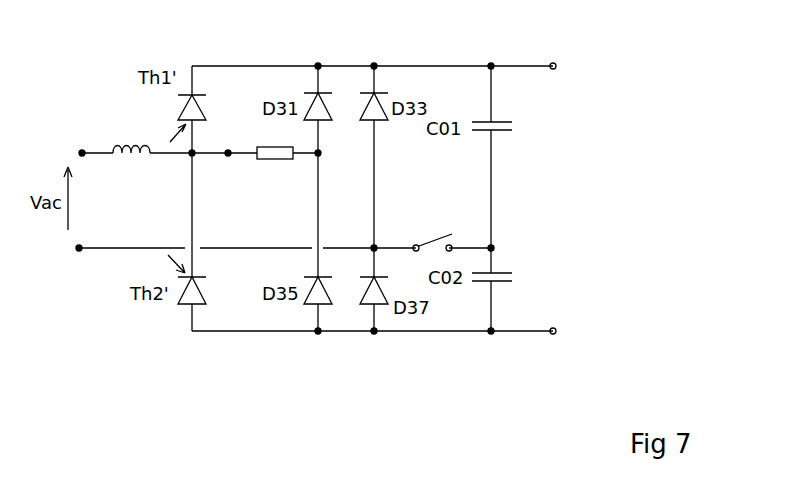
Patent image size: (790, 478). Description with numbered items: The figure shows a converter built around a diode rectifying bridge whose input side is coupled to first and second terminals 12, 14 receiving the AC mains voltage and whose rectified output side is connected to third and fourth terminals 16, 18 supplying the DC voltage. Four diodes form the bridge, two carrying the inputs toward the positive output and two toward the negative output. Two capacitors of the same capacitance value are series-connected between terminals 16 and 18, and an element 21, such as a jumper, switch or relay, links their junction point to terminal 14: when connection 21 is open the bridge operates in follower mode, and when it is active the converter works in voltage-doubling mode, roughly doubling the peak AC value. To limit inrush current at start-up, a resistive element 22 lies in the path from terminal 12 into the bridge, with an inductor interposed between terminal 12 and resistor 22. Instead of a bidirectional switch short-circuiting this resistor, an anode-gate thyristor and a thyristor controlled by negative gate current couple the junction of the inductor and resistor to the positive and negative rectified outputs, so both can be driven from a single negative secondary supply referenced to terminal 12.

The first terminal 12 is at (82, 150).
The second terminal 14 is at (79, 251).
The third terminal 16 is at (556, 64).
The fourth terminal 18 is at (556, 331).
The element 21 is at (437, 236).
The resistive element 22 is at (275, 162).